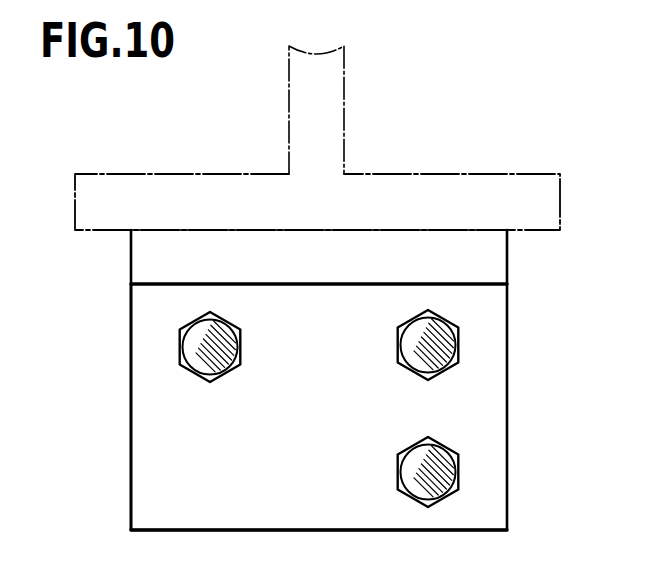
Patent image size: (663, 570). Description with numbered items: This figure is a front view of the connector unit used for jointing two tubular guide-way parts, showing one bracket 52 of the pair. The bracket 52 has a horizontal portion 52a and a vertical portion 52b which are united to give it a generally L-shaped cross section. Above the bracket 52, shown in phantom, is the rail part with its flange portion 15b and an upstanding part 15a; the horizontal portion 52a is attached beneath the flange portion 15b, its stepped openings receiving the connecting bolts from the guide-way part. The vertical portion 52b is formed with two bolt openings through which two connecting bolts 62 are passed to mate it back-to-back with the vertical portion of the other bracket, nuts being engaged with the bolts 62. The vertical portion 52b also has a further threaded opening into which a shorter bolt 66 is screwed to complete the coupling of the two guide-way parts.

The stem / shaft portion 15a is at (292, 105).
The flange portion 15b is at (105, 178).
The bracket 52 is at (508, 282).
The horizontal portion 52a is at (375, 240).
The vertical portion 52b is at (150, 450).
The connecting bolts 62 is at (190, 348).
The shorter bolt 66 is at (445, 474).